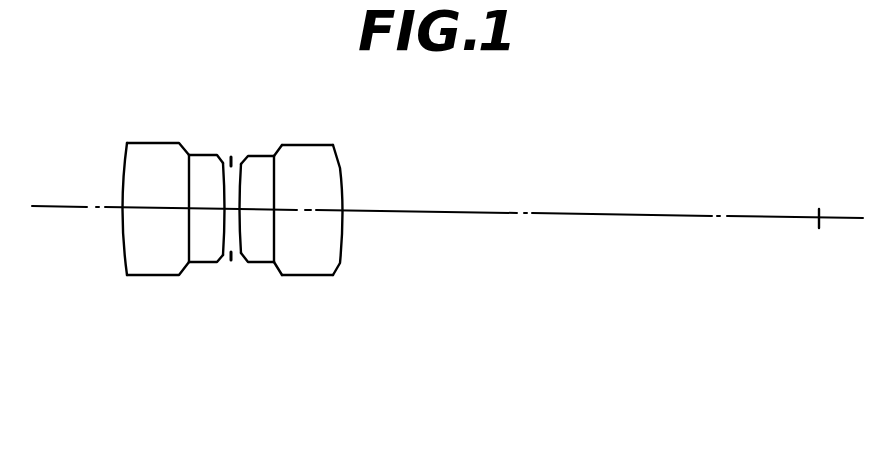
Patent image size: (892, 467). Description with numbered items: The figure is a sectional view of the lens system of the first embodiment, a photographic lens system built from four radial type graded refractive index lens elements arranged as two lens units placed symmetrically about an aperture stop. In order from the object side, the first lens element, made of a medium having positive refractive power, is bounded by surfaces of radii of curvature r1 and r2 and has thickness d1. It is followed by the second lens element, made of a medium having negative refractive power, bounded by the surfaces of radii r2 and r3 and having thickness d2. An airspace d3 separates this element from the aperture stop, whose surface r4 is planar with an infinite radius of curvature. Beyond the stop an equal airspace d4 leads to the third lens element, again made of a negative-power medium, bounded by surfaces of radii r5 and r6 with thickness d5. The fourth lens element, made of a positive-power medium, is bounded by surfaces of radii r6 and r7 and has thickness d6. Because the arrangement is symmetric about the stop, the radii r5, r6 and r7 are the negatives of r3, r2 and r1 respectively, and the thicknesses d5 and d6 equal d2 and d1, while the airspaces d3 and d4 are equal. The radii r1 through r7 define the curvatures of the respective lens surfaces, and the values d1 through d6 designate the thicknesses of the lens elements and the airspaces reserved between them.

The radius of curvature of first surface r1 is at (123, 165).
The radius of curvature of second surface r2 is at (190, 173).
The radius of curvature of third surface r3 is at (223, 180).
The aperture stop surface r4 is at (229, 158).
The radius of curvature of fifth surface r5 is at (240, 180).
The radius of curvature of sixth surface r6 is at (277, 177).
The radius of curvature of seventh surface r7 is at (338, 167).
The thickness of first lens element d1 is at (153, 208).
The thickness of second lens element d2 is at (202, 209).
The airspace before aperture stop d3 is at (220, 209).
The airspace after aperture stop d4 is at (241, 209).
The thickness of third lens element d5 is at (260, 210).
The thickness of fourth lens element d6 is at (308, 211).